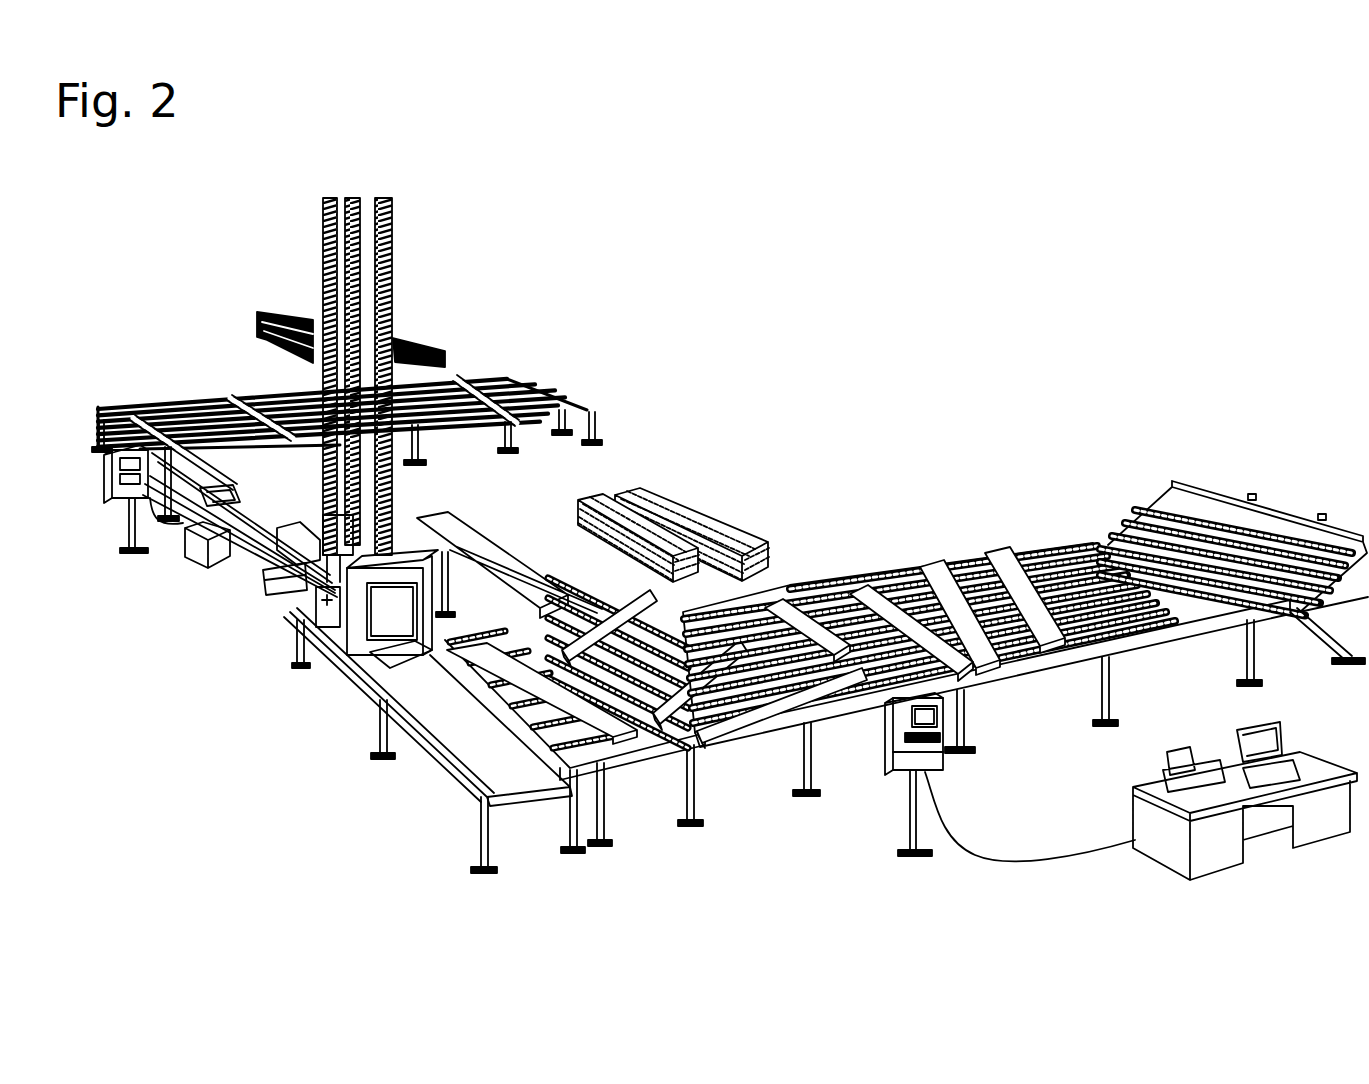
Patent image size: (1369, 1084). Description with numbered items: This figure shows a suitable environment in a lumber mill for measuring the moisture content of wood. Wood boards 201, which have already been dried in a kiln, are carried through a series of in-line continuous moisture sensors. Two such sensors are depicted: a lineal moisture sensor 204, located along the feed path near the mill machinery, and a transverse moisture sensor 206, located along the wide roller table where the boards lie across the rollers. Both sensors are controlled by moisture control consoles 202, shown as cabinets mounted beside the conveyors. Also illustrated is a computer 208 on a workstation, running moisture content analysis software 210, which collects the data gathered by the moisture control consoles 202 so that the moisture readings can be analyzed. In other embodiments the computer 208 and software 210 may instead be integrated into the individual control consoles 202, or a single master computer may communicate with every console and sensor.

The wood boards 201 is at (690, 500).
The moisture control consoles 202 is at (105, 480).
The lineal moisture sensor 204 is at (210, 558).
The transverse moisture sensor 206 is at (880, 623).
The computer 208 is at (1218, 747).
The moisture content analysis software 210 is at (1220, 740).